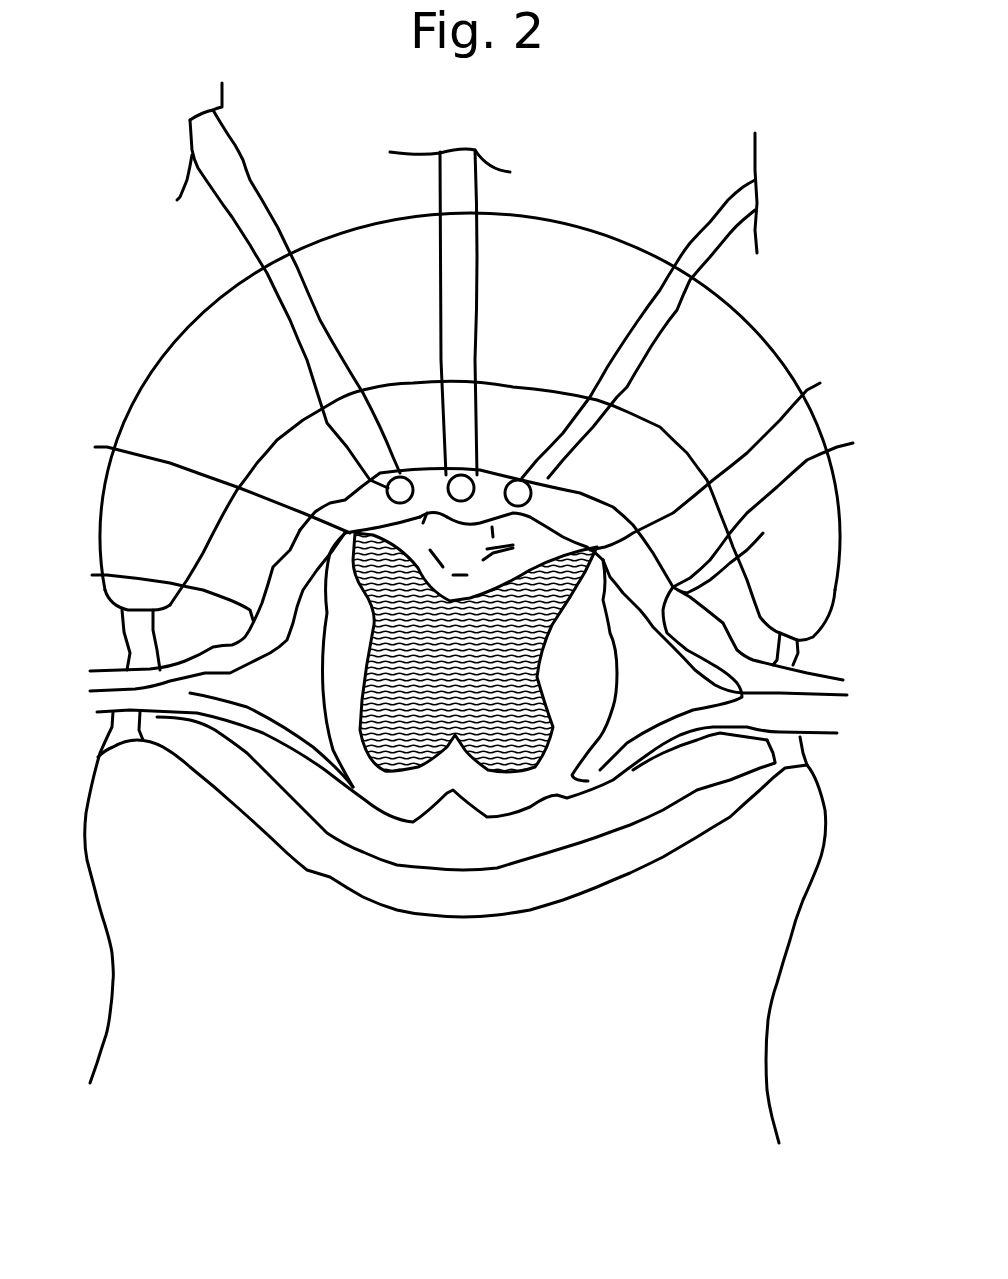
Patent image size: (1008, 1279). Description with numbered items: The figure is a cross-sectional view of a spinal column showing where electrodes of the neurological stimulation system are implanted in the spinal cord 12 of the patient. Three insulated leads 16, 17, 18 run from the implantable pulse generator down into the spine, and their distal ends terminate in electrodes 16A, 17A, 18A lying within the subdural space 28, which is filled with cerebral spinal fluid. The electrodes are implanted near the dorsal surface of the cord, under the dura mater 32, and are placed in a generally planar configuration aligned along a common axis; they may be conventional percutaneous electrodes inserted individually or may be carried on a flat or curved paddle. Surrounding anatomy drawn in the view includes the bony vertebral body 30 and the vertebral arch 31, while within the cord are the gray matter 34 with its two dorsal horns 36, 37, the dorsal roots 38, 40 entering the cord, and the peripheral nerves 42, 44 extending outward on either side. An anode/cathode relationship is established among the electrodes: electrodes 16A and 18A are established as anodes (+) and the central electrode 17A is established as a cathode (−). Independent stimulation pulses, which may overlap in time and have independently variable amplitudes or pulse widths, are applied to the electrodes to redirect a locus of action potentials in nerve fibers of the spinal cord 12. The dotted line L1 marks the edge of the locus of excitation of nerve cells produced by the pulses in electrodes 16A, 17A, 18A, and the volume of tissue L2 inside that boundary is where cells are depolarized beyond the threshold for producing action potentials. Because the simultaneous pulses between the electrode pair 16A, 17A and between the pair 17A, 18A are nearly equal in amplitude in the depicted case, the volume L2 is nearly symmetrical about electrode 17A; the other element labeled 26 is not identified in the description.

The spinal cord 12 is at (157, 310).
The insulated lead 16 is at (707, 220).
The electrode 16A is at (540, 490).
The insulated lead 17 is at (440, 203).
The electrode 17A is at (430, 470).
The insulated lead 18 is at (270, 213).
The electrode 18A is at (372, 487).
The dura mater 26 is at (507, 403).
The subdural space 28 is at (363, 520).
The bony vertebral body 30 is at (447, 977).
The vertebral arch 31 is at (760, 363).
The dura mater 32 is at (512, 930).
The gray matter 34 is at (392, 740).
The dorsal horn 36 is at (726, 457).
The dorsal horn 37 is at (201, 476).
The dorsal root 38 is at (152, 586).
The dorsal root 40 is at (784, 505).
The peripheral nerve 42 is at (112, 700).
The peripheral nerve 44 is at (827, 715).
The edge of locus of excitation L1 is at (515, 549).
The volume of tissue L2 is at (409, 533).